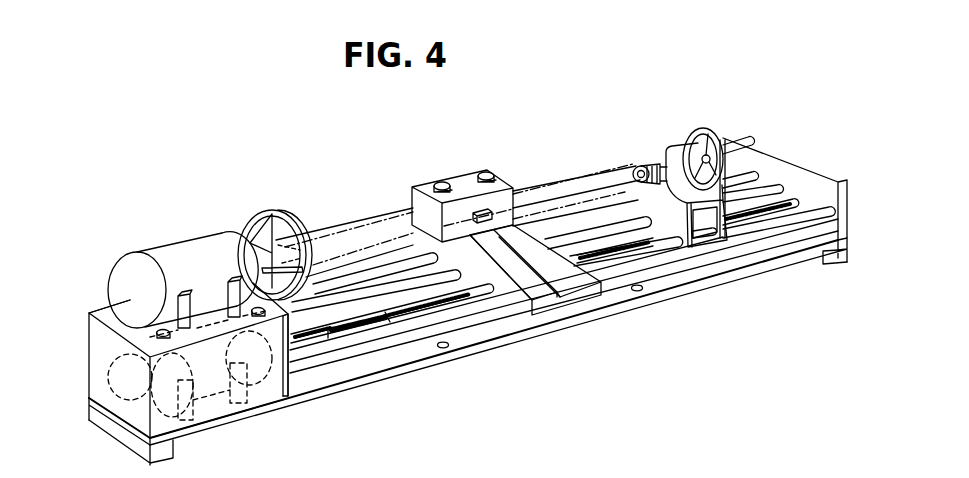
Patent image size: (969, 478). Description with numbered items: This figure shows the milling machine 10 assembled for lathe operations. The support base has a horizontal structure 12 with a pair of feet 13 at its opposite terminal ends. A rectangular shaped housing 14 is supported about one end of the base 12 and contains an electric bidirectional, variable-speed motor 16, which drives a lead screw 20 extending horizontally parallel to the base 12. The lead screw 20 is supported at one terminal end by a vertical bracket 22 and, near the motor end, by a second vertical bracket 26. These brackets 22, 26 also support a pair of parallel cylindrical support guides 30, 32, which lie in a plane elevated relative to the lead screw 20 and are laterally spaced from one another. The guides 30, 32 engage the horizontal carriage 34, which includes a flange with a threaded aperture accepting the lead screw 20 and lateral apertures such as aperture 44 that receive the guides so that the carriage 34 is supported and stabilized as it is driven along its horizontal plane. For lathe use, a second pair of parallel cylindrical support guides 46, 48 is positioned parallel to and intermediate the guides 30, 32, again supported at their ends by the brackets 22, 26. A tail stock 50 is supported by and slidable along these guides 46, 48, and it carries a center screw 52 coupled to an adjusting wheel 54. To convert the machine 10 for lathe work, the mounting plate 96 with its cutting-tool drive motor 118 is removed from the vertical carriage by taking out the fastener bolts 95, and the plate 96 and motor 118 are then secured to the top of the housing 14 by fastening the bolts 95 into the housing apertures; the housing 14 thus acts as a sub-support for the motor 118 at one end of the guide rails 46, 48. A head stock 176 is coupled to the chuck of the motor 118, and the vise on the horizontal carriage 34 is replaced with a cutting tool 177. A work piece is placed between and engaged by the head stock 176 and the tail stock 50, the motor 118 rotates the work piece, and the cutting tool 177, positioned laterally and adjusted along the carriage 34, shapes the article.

The milling machine 10 is at (480, 413).
The horizontal structure 12 is at (252, 418).
The feet 13 is at (173, 452).
The rectangular shaped housing 14 is at (90, 388).
The electric bidirectional, variable-speed motor 16 is at (92, 368).
The lead screw 20 is at (365, 332).
The vertical bracket 22 is at (847, 227).
The second vertical bracket 26 is at (290, 392).
The cylindrical support guide 30 is at (340, 278).
The cylindrical support guide 32 is at (413, 338).
The horizontal carriage member 34 is at (570, 300).
The lateral aperture 44 is at (515, 310).
The cylindrical support guide 46 is at (382, 292).
The cylindrical support guide 48 is at (452, 302).
The tail stock 50 is at (676, 154).
The center screw 52 is at (646, 163).
The adjusting wheel 54 is at (703, 129).
The fastener bolts 95 is at (253, 318).
The mounting plate 96 is at (88, 315).
The cutting-tool drive motor 118 is at (174, 249).
The head stock 176 is at (273, 212).
The cutting tool 177 is at (448, 173).